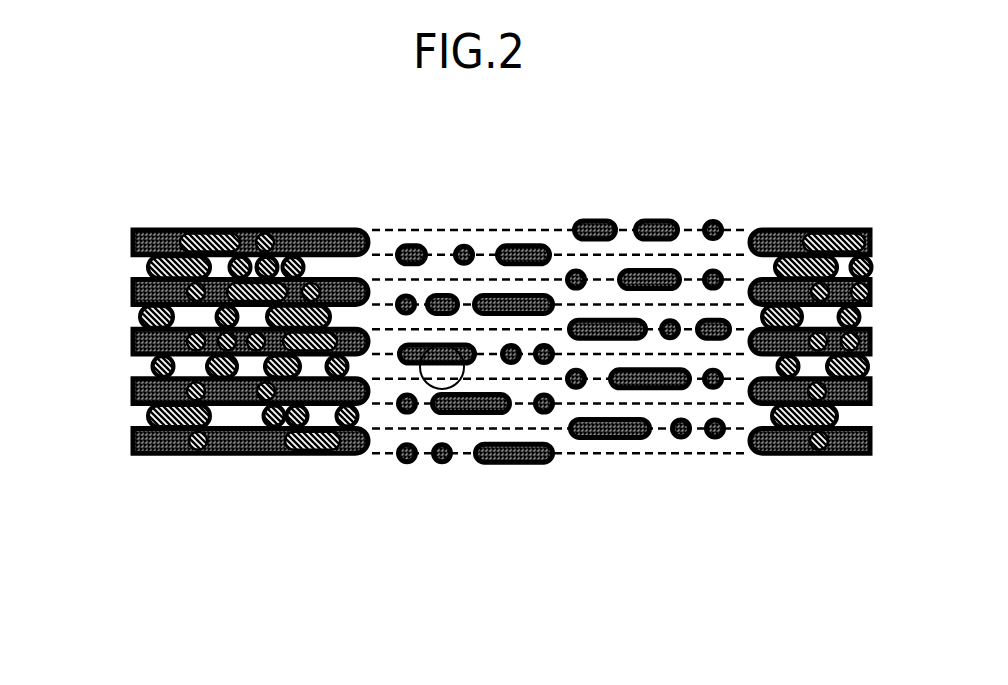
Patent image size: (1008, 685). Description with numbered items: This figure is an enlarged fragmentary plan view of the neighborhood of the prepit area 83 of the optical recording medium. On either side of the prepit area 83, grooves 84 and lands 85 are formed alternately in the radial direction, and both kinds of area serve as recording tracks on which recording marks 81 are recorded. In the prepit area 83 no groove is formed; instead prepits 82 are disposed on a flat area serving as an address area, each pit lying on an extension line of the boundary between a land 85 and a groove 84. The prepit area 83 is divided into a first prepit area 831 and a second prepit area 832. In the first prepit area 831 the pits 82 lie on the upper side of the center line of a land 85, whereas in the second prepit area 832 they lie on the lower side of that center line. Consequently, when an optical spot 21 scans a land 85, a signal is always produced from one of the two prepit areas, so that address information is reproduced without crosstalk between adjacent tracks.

The recording marks 81 is at (220, 230).
The prepits 82 is at (414, 246).
The prepit area 83 is at (753, 550).
The first prepit area 831 is at (558, 473).
The second prepit area 832 is at (753, 473).
The grooves 84 is at (147, 247).
The lands 85 is at (150, 277).
The optical spot 21 is at (425, 382).